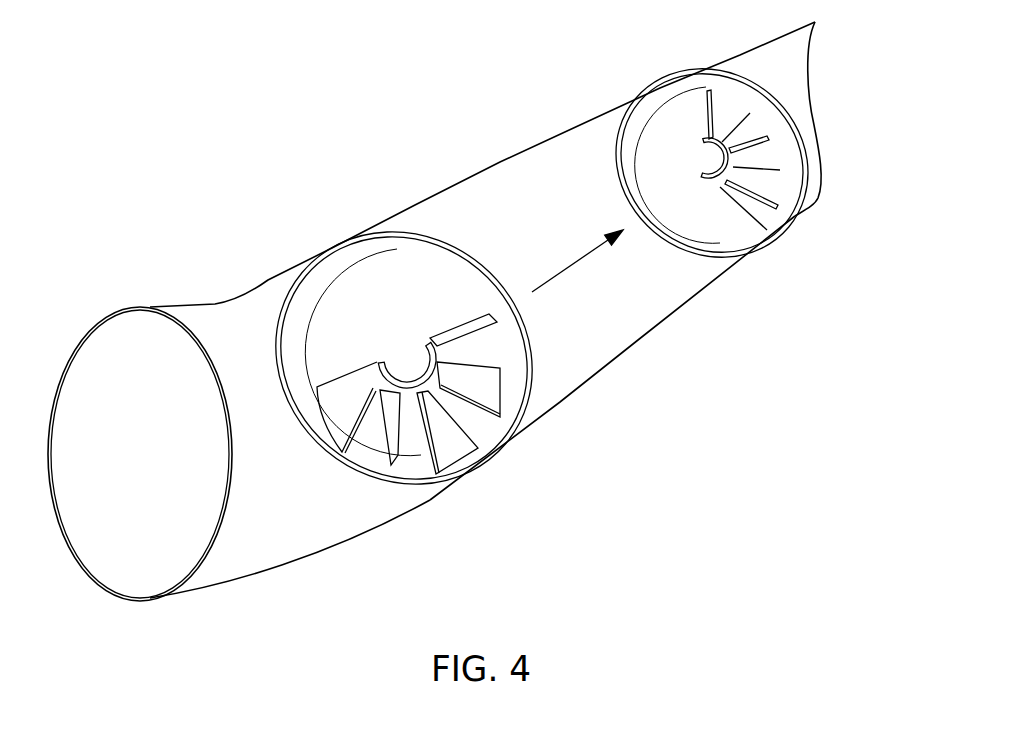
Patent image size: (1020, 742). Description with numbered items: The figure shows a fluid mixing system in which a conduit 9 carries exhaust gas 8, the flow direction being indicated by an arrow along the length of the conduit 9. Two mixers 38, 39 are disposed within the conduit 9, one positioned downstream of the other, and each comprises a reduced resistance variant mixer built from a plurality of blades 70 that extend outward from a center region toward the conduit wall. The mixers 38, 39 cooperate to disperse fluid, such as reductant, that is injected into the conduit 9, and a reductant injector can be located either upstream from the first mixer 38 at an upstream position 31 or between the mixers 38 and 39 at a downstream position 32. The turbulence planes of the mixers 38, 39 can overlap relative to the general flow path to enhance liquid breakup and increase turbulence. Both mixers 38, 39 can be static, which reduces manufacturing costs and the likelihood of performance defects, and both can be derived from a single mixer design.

The exhaust gas conduit 9 is at (434, 340).
The upstream position 31 is at (193, 289).
The downstream position 32 is at (503, 143).
The mixer 38 is at (482, 457).
The mixer 39 is at (773, 223).
The blades 70 is at (447, 343).
The exhaust gas 8 is at (566, 271).